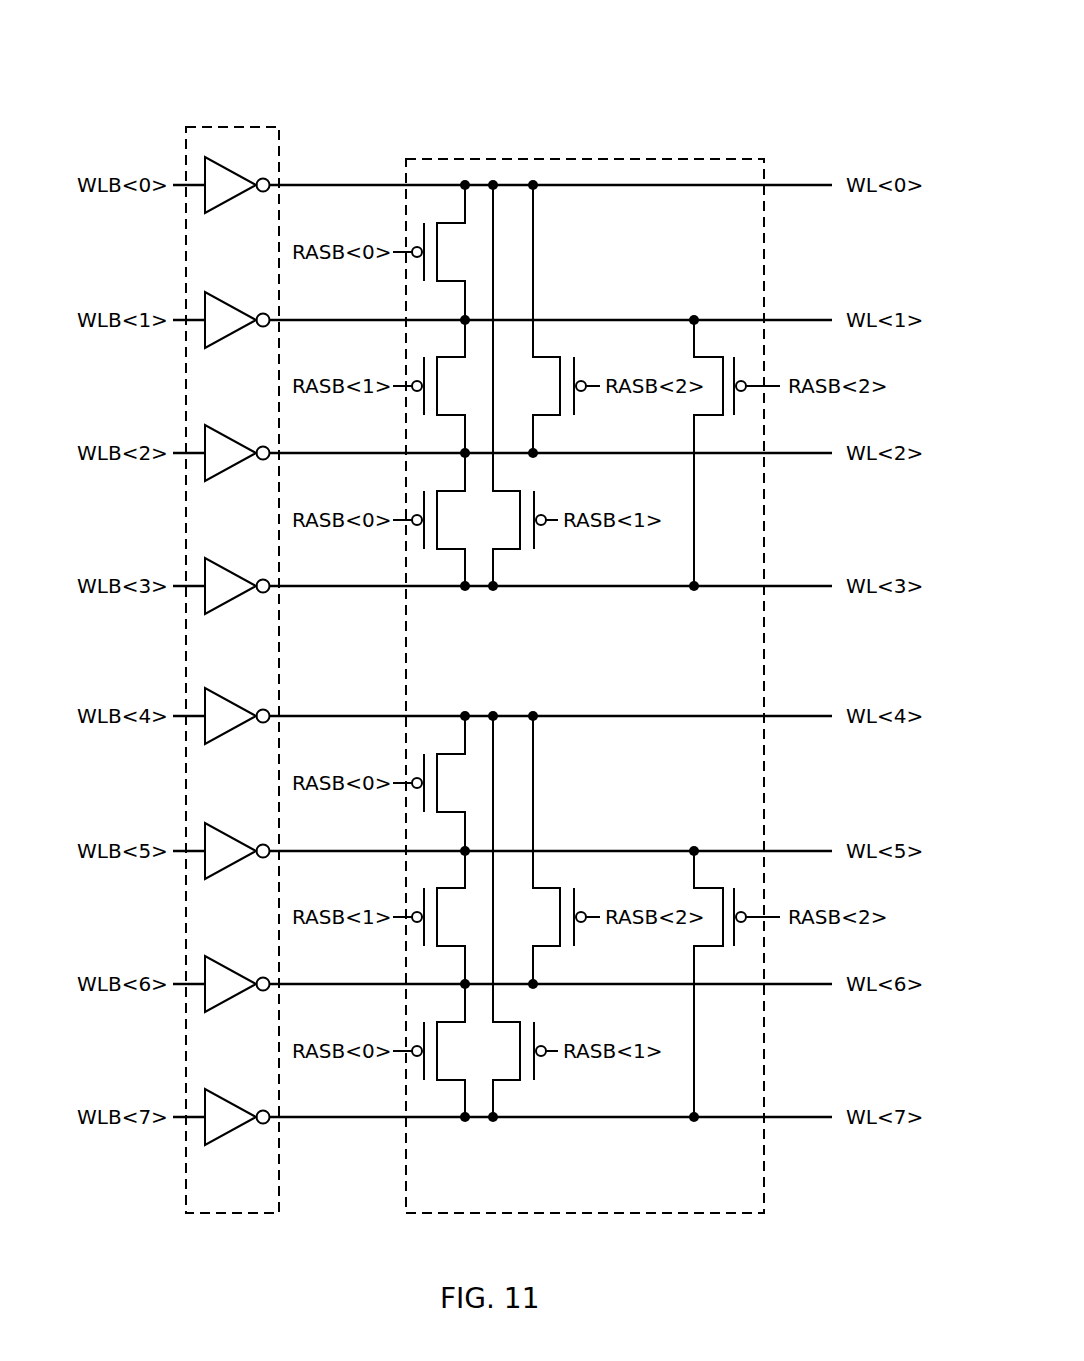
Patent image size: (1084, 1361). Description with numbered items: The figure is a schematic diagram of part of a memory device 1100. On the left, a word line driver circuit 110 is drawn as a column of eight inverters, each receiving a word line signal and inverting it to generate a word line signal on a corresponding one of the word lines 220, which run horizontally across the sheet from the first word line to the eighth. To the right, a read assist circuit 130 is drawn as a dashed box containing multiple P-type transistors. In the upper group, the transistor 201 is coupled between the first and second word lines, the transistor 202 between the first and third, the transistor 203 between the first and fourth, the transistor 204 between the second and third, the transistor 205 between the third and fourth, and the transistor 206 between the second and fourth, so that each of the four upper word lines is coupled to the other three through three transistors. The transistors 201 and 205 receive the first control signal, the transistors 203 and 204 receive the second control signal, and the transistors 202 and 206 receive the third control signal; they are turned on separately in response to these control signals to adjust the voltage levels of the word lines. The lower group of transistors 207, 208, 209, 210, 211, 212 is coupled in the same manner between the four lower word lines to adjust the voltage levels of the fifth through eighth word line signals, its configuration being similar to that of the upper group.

The memory device 1100 is at (130, 50).
The word line driver circuit 110 is at (232, 126).
The read assist circuit 130 is at (582, 158).
The transistor 201 is at (451, 290).
The transistor 202 is at (574, 424).
The transistor 203 is at (534, 558).
The transistor 204 is at (451, 424).
The transistor 205 is at (451, 558).
The transistor 206 is at (737, 424).
The transistor 207 is at (451, 821).
The transistor 208 is at (574, 955).
The transistor 209 is at (534, 1089).
The transistor 210 is at (451, 955).
The transistor 211 is at (451, 1089).
The transistor 212 is at (737, 955).
The word lines 220 is at (569, 651).